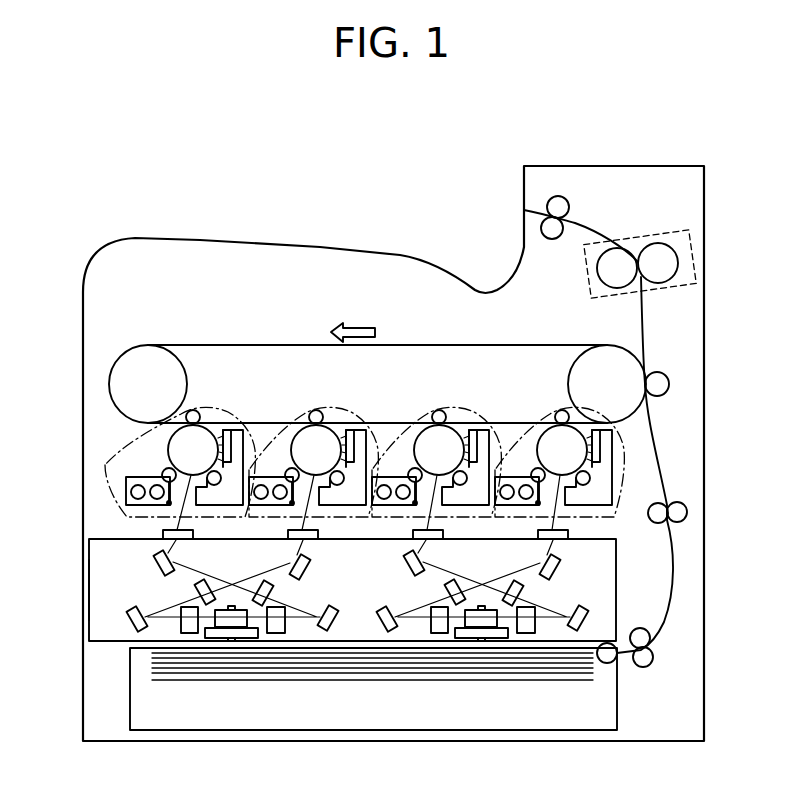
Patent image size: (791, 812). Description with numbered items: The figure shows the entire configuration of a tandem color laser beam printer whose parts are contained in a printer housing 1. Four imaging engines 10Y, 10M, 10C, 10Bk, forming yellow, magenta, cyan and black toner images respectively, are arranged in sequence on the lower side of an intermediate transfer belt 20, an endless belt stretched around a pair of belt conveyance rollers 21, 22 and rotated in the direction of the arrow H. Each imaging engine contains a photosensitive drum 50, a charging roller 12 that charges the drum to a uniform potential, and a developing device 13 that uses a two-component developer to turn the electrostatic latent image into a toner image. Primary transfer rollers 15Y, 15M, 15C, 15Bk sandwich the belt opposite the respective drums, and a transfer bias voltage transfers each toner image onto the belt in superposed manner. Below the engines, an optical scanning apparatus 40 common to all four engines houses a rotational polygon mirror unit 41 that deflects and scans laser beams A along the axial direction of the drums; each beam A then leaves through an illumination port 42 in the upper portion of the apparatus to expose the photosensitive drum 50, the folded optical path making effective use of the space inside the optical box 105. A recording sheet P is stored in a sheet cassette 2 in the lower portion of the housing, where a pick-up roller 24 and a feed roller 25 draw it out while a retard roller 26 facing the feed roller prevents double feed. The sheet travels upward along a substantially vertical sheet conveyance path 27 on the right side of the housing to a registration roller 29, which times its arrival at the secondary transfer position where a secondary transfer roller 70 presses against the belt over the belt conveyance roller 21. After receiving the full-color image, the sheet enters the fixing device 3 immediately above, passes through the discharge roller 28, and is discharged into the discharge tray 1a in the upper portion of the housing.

The printer housing 1 is at (95, 423).
The discharge tray 1a is at (424, 253).
The sheet cassette 2 is at (618, 692).
The fixing device 3 is at (662, 240).
The imaging engine 10Y is at (137, 450).
The imaging engine 10M is at (313, 472).
The imaging engine 10C is at (436, 467).
The imaging engine 10Bk is at (633, 463).
The charging roller 12 is at (590, 478).
The developing device 13 is at (120, 494).
The primary transfer roller 15Y is at (207, 408).
The primary transfer roller 15M is at (318, 410).
The primary transfer roller 15C is at (441, 410).
The primary transfer roller 15Bk is at (558, 408).
The intermediate transfer belt 20 is at (295, 345).
The belt conveyance roller 21 is at (605, 357).
The belt conveyance roller 22 is at (142, 354).
The pick-up roller 24 is at (606, 664).
The feed roller 25 is at (650, 637).
The retard roller 26 is at (655, 657).
The sheet conveyance path 27 is at (645, 323).
The discharge roller 28 is at (559, 196).
The registration roller 29 is at (688, 512).
The optical scanning apparatus 40 is at (616, 562).
The rotational polygon mirror unit 41 is at (357, 633).
The illumination port 42 is at (167, 532).
The photosensitive drum 50 is at (198, 438).
The secondary transfer roller 70 is at (669, 383).
The optical box 105 is at (107, 591).
The laser beam A is at (192, 578).
The arrow H is at (353, 316).
The recording sheet P is at (400, 682).